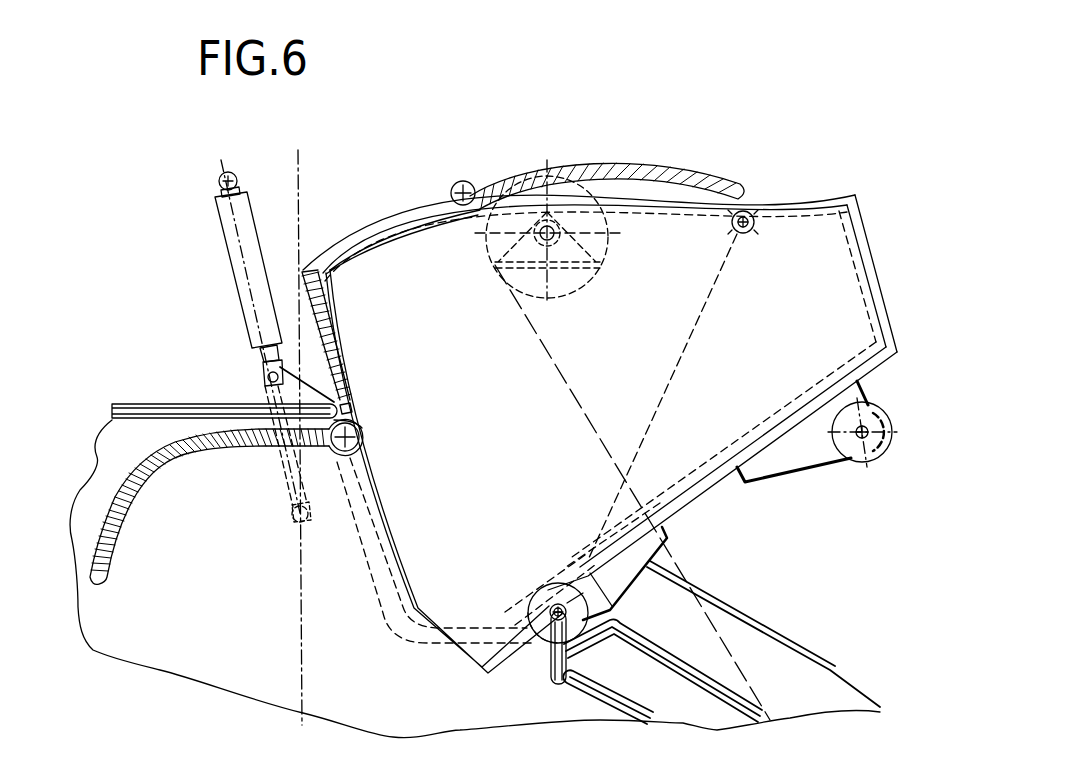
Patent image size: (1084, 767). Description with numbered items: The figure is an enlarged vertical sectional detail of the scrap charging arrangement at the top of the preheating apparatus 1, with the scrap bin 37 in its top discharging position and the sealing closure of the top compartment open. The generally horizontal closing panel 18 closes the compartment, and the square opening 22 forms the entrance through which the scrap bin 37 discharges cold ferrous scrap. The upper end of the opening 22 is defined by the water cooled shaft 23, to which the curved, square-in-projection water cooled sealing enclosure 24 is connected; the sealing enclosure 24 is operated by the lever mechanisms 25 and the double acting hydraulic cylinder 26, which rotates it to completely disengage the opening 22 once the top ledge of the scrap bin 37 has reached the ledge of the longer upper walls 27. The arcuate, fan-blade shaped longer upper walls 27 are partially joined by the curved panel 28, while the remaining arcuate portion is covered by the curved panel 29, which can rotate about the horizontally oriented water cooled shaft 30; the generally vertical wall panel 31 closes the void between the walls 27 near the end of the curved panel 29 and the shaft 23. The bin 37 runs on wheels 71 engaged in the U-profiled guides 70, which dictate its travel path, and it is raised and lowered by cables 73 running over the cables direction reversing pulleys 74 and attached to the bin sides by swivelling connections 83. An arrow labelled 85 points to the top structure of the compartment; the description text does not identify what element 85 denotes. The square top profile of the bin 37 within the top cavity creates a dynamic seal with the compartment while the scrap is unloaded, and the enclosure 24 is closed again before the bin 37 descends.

The preheating apparatus 1 is at (214, 362).
The closing panel 18 is at (138, 403).
The square opening 22 is at (380, 427).
The water cooled shaft 23 is at (364, 427).
The sealing enclosure 24 is at (155, 457).
The lever mechanisms 25 is at (313, 396).
The hydraulic cylinder 26 is at (228, 218).
The longer upper walls 27 is at (693, 327).
The curved panel 28 is at (388, 230).
The curved panel 29 is at (630, 163).
The water cooled shaft 30 is at (470, 181).
The vertical wall panel 31 is at (332, 342).
The scrap bin 37 is at (710, 497).
The U-profiled guides 70 is at (773, 655).
The wheels 71 is at (880, 458).
The cables 73 is at (678, 560).
The cables direction reversing pulleys 74 is at (567, 282).
The swivelling connections 83 is at (752, 226).
The rear cover 85 is at (873, 208).